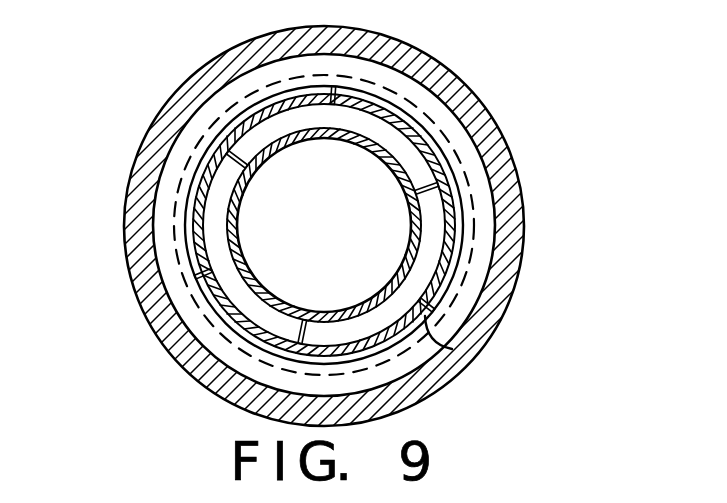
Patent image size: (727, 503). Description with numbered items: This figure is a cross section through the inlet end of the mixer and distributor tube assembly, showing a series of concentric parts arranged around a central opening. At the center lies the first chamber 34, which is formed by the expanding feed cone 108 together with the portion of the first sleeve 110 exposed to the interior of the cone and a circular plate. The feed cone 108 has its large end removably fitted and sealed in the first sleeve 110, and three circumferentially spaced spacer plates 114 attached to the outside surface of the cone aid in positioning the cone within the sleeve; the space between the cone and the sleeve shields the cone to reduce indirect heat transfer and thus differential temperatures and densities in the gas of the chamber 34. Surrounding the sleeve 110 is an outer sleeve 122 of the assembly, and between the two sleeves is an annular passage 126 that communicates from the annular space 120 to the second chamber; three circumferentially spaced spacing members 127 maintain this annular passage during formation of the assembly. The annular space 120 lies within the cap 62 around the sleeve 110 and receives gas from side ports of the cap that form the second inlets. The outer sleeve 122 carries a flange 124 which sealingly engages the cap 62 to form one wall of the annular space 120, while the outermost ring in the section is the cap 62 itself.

The cap 62 is at (482, 121).
The flange 124 is at (474, 158).
The outer sleeve 122 is at (453, 295).
The annular passage 126 is at (458, 211).
The spacing members 127 is at (457, 352).
The first sleeve 110 is at (450, 254).
The spacer plates 114 is at (228, 173).
The annular space 120 is at (217, 228).
The feed cone 108 is at (228, 196).
The first chamber 34 is at (340, 235).